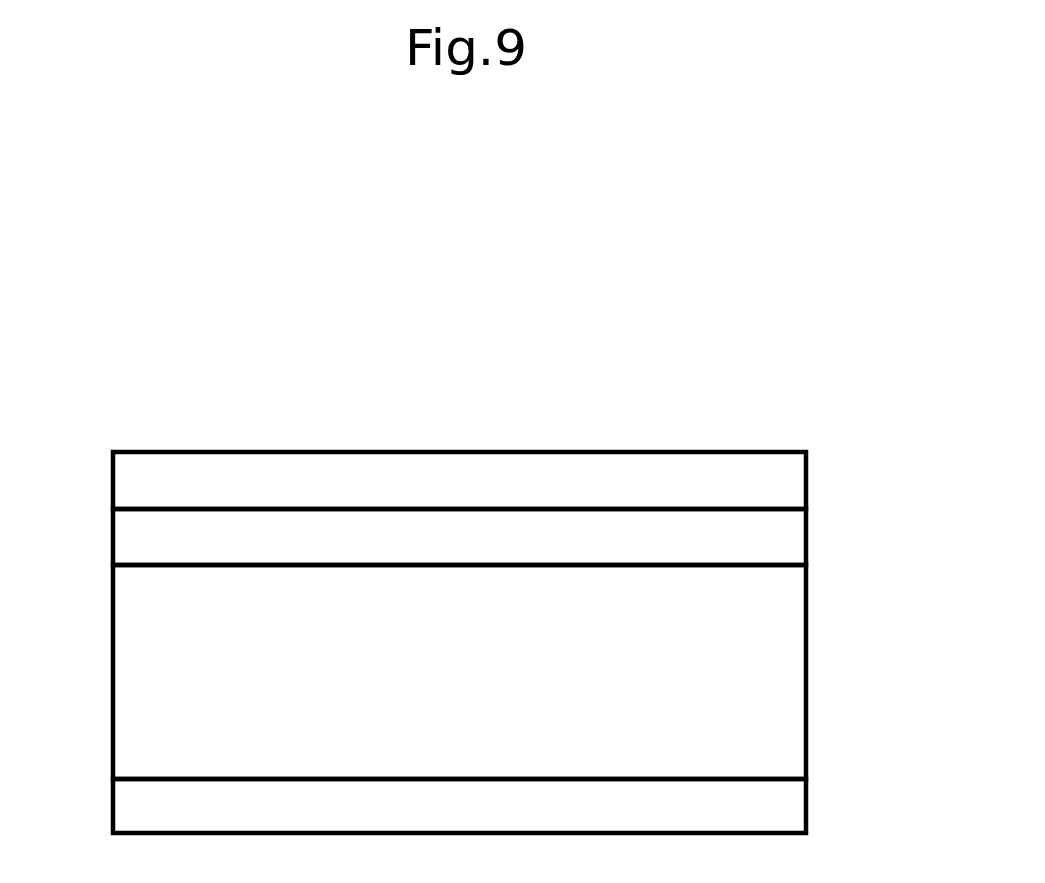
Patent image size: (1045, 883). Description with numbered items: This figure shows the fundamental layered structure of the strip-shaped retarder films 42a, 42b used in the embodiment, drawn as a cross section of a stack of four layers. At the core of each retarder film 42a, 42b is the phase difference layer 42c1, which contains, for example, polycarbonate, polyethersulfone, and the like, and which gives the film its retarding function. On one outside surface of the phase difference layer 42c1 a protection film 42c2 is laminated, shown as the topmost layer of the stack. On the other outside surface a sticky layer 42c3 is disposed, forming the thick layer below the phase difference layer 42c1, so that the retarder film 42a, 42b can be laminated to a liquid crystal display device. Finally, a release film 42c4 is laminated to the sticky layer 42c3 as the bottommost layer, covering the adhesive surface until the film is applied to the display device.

The strip-shaped retarder film 42a is at (490, 588).
The strip-shaped retarder film 42b is at (530, 589).
The phase difference layer 42c1 is at (772, 528).
The protection film 42c2 is at (773, 478).
The sticky layer 42c3 is at (768, 671).
The release film 42c4 is at (783, 808).